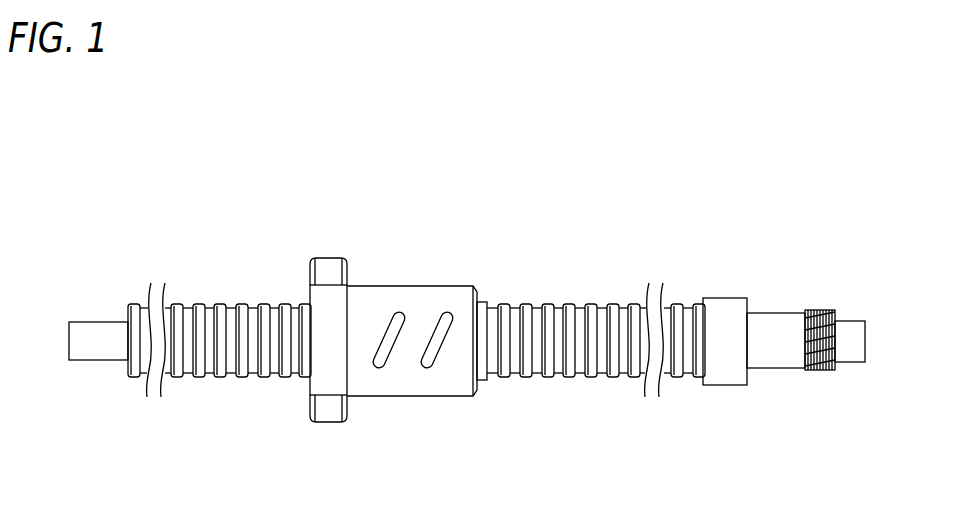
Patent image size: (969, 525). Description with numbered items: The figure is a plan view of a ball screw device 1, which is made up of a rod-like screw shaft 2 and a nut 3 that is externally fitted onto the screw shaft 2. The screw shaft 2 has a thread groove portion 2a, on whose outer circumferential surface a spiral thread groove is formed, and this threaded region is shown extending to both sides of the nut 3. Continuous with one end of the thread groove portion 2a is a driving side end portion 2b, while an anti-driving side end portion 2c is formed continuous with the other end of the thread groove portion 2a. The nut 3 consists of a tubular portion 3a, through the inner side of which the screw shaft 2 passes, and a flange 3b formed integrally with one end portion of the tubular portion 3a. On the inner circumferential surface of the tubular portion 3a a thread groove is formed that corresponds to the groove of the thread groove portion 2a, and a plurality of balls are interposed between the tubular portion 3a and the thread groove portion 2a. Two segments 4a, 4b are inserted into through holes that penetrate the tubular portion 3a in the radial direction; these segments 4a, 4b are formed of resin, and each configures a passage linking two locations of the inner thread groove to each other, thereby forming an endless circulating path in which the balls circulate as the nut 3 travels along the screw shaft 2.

The ball screw device 1 is at (401, 220).
The screw shaft 2 is at (541, 290).
The thread groove portion 2a is at (263, 323).
The driving side end portion 2b is at (783, 345).
The anti-driving side end portion 2c is at (98, 346).
The nut 3 is at (392, 412).
The tubular portion 3a is at (437, 380).
The flange 3b is at (327, 378).
The segment 4a is at (381, 326).
The segment 4b is at (432, 333).